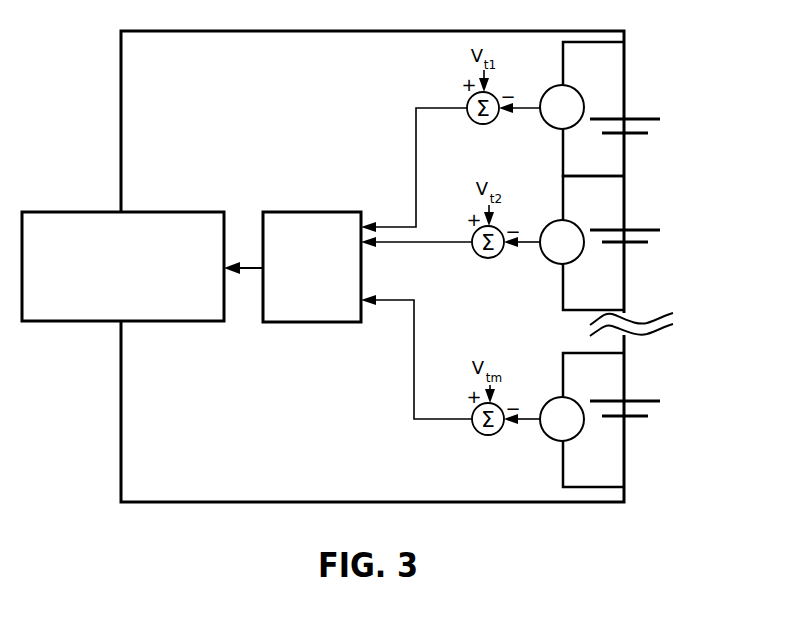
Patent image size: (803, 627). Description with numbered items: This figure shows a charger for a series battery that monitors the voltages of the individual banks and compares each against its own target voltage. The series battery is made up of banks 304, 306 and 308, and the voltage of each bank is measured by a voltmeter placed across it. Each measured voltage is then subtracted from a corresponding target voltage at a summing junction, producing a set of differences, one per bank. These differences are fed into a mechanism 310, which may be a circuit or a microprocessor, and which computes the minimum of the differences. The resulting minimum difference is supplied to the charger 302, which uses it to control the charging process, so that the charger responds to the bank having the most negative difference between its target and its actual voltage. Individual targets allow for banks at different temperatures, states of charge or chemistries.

The charger 302 is at (123, 266).
The bank 304 is at (635, 109).
The bank 306 is at (635, 243).
The bank 308 is at (635, 420).
The mechanism 310 is at (300, 267).